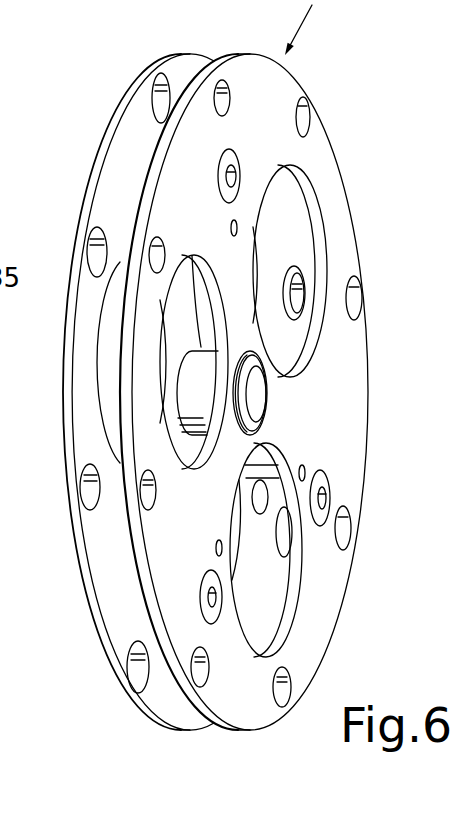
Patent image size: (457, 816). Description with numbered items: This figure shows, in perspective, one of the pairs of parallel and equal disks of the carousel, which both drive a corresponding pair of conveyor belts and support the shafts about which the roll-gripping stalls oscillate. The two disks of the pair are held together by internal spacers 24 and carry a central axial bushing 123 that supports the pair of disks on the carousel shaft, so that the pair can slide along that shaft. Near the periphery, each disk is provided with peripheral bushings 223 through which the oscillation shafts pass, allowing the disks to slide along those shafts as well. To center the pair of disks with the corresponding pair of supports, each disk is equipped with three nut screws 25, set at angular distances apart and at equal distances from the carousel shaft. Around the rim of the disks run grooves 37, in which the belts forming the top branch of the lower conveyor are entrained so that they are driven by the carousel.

The grooves 37 is at (167, 145).
The axial bushing 123 is at (262, 394).
The peripheral bushings 223 is at (302, 283).
The nut screws 25 is at (236, 167).
The internal spacers 24 is at (237, 228).